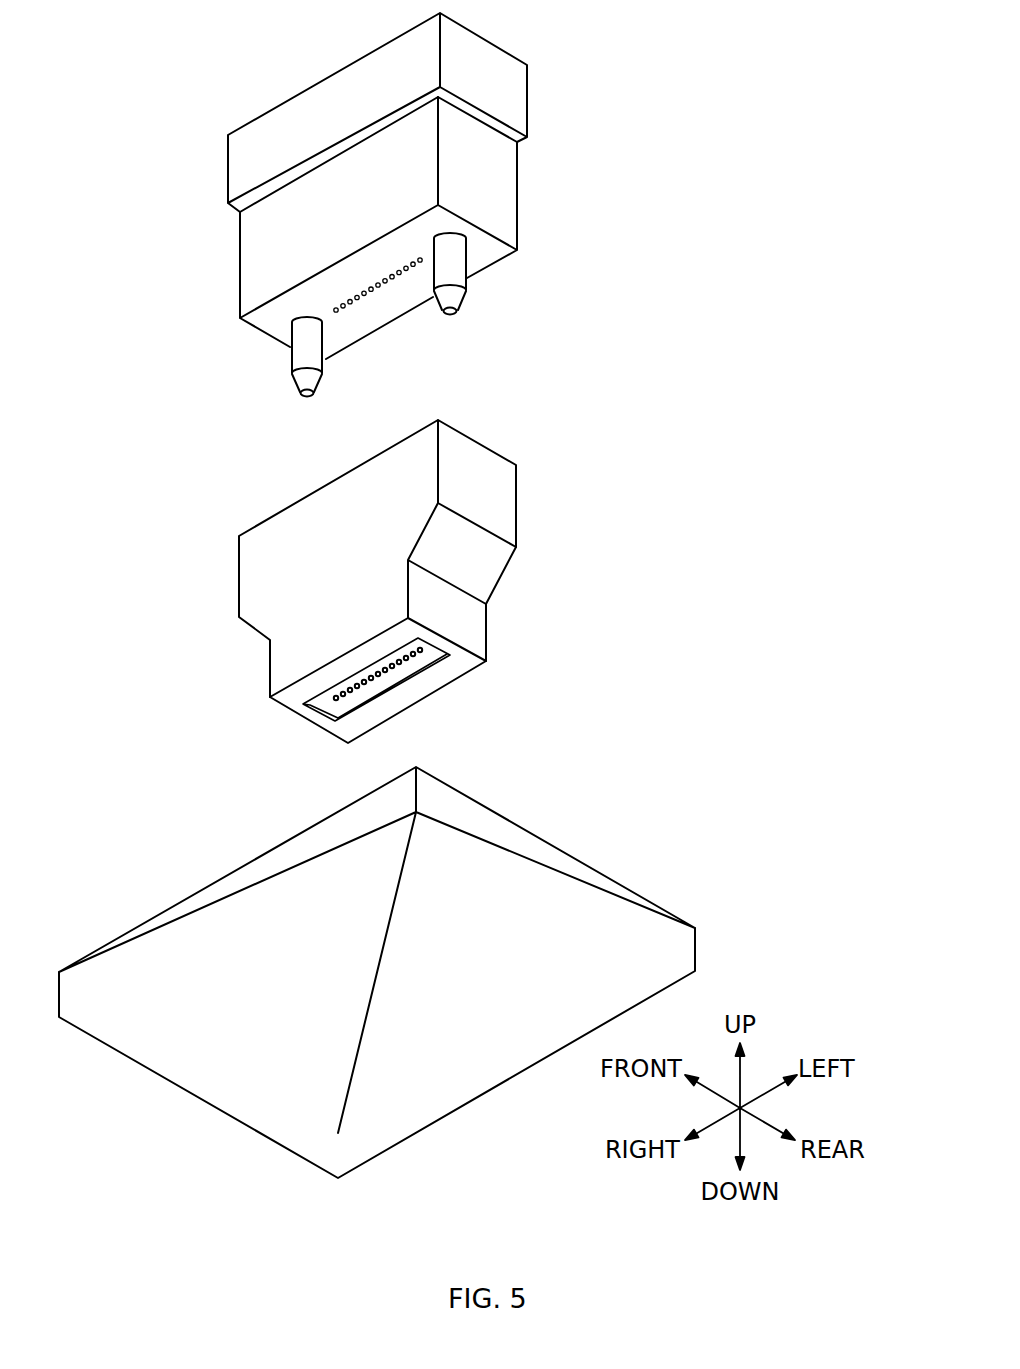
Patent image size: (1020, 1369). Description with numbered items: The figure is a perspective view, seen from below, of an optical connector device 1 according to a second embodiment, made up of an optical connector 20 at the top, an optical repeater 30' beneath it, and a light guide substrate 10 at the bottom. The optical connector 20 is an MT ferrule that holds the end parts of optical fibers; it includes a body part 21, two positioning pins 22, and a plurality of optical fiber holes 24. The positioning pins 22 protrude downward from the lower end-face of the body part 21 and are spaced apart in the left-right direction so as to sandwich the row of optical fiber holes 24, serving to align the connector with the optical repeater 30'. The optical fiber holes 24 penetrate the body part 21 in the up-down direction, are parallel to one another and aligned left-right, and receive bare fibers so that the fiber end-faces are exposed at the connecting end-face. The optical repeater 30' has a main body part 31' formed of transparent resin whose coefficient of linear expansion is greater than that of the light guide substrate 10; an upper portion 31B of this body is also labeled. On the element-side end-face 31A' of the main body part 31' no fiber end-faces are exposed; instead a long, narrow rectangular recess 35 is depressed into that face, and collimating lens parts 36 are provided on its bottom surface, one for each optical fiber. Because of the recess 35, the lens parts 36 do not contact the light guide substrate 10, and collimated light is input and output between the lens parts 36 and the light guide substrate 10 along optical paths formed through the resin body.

The optical connector device 1 is at (761, 336).
The light guide substrate 10 is at (641, 848).
The optical connector 20 is at (590, 265).
The body part 21 is at (517, 181).
The positioning pins 22 is at (323, 367).
The optical fiber holes 24 is at (396, 278).
The optical repeater 30' is at (466, 591).
The main body part 31' is at (396, 591).
The element-side end-face 31A' is at (434, 680).
The upper portion of holder 31B is at (305, 497).
The recess 35 is at (400, 683).
The lens parts 36 is at (404, 661).